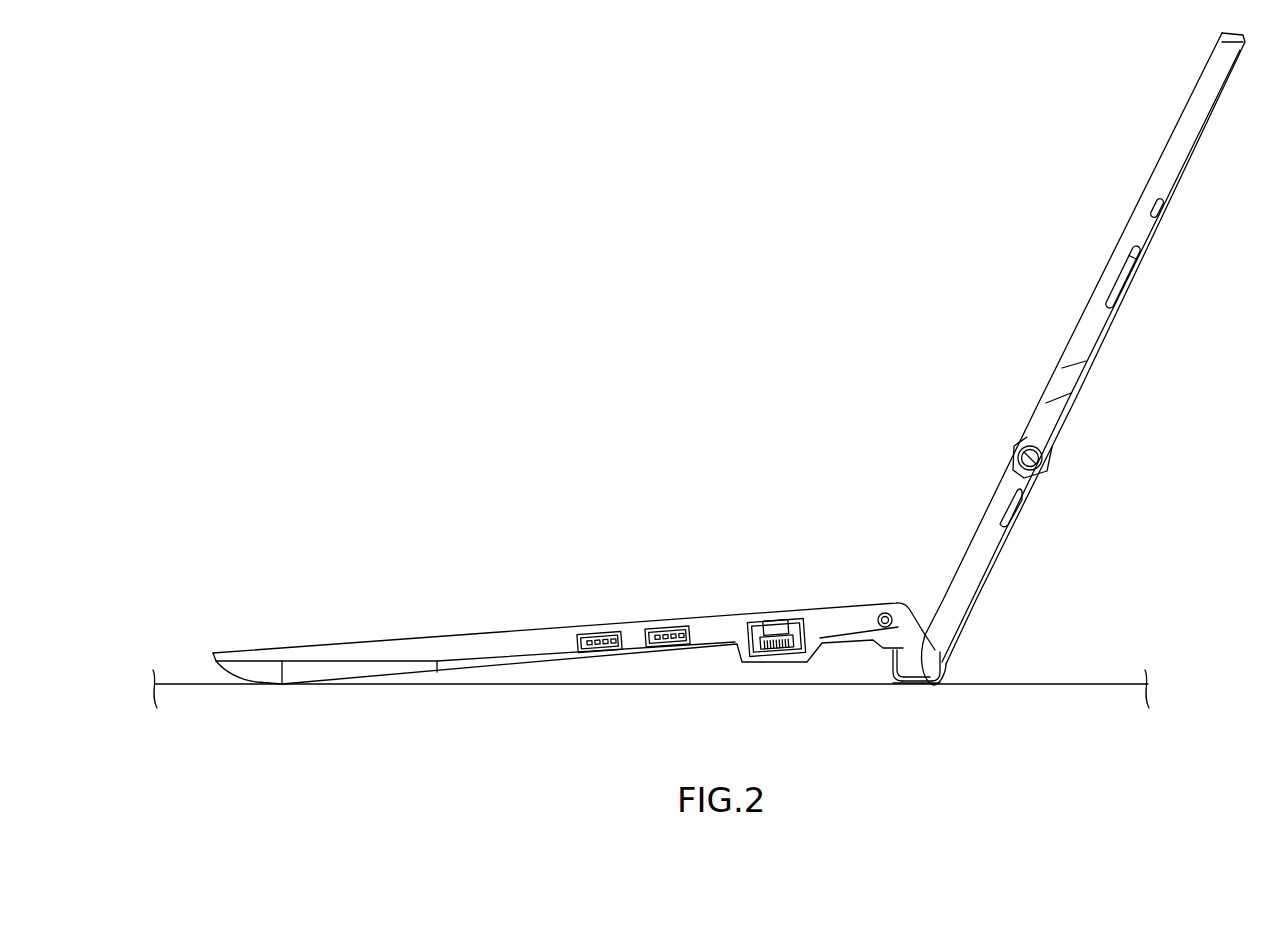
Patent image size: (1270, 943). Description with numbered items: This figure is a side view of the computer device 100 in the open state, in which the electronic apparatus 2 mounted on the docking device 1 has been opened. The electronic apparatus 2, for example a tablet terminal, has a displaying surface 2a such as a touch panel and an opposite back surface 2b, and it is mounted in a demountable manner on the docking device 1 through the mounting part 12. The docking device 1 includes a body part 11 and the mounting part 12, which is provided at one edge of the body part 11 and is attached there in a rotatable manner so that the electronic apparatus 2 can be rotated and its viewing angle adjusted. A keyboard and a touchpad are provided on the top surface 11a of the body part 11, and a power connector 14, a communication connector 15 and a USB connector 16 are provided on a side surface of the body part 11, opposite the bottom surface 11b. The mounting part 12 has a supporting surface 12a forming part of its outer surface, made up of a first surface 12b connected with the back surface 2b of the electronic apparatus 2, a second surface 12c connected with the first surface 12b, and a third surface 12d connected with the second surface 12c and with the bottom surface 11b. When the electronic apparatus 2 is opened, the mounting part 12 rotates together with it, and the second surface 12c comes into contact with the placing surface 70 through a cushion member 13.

The computer device 100 is at (633, 250).
The docking device 1 is at (574, 608).
The electronic apparatus 2 is at (1162, 142).
The displaying surface 2a is at (1128, 232).
The back surface 2b is at (1150, 247).
The body part 11 is at (435, 650).
The top surface 11a is at (714, 610).
The bottom surface 11b is at (822, 660).
The mounting part 12 is at (920, 646).
The supporting surface 12a is at (960, 738).
The first surface 12b is at (942, 680).
The second surface 12c is at (915, 684).
The third surface 12d is at (892, 675).
The cushion member 13 is at (950, 660).
The power connector 14 is at (883, 610).
The communication connector 15 is at (775, 612).
The USB connector 16 is at (600, 656).
The placing surface 70 is at (1085, 682).